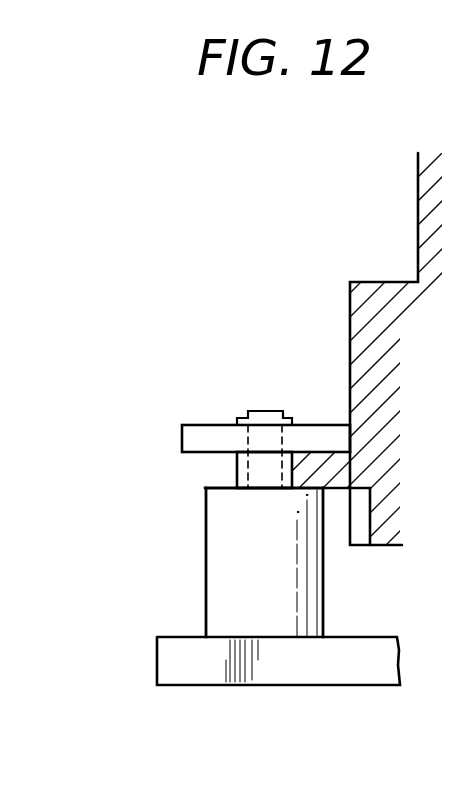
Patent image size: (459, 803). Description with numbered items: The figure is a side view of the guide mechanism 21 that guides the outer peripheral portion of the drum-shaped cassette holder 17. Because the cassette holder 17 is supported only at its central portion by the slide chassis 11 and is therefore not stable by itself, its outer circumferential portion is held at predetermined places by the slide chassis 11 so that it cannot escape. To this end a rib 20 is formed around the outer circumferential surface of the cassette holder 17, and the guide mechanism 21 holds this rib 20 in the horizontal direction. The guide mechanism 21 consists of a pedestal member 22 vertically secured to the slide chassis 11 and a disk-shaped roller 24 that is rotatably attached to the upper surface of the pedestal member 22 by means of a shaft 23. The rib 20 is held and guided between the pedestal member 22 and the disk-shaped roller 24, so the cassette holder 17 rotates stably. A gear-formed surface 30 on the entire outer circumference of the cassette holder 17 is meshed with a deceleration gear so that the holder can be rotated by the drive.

The slide chassis 11 is at (270, 667).
The cassette holder 17 is at (418, 171).
The rib 20 is at (316, 465).
The guide mechanism 21 is at (136, 330).
The pedestal member 22 is at (223, 562).
The shaft 23 is at (238, 470).
The disk-shaped roller 24 is at (210, 433).
The gear-formed surface 30 is at (357, 517).